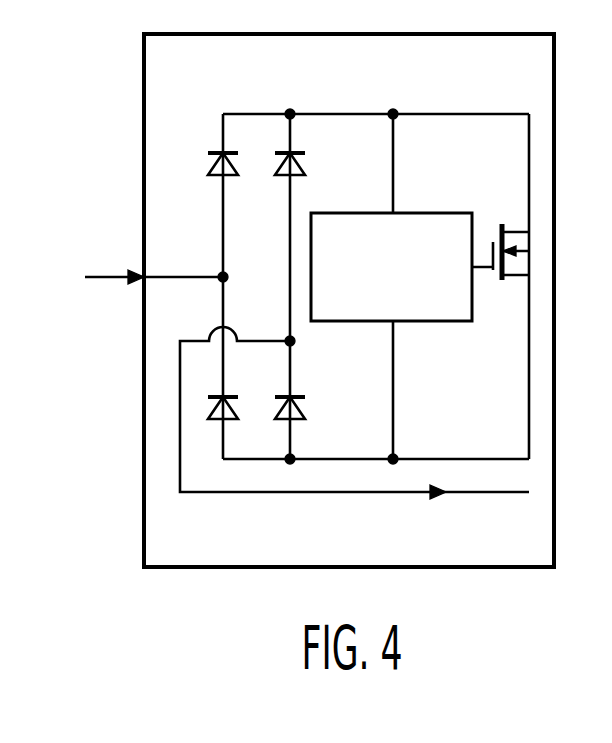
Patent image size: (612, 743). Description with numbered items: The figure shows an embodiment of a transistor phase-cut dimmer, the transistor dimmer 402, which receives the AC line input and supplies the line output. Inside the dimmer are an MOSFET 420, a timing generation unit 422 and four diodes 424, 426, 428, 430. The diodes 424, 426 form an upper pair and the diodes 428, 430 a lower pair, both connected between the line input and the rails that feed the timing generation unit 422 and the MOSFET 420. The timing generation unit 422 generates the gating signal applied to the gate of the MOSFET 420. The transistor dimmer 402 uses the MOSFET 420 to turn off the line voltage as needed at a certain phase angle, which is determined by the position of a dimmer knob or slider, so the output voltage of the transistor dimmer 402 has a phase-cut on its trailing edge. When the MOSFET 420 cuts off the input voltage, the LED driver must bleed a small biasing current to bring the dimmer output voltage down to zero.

The transistor dimmer 402 is at (144, 160).
The MOSFET 420 is at (501, 224).
The timing generation unit 422 is at (432, 322).
The diode 424 is at (211, 150).
The diode 426 is at (305, 172).
The diode 428 is at (238, 408).
The diode 430 is at (305, 406).